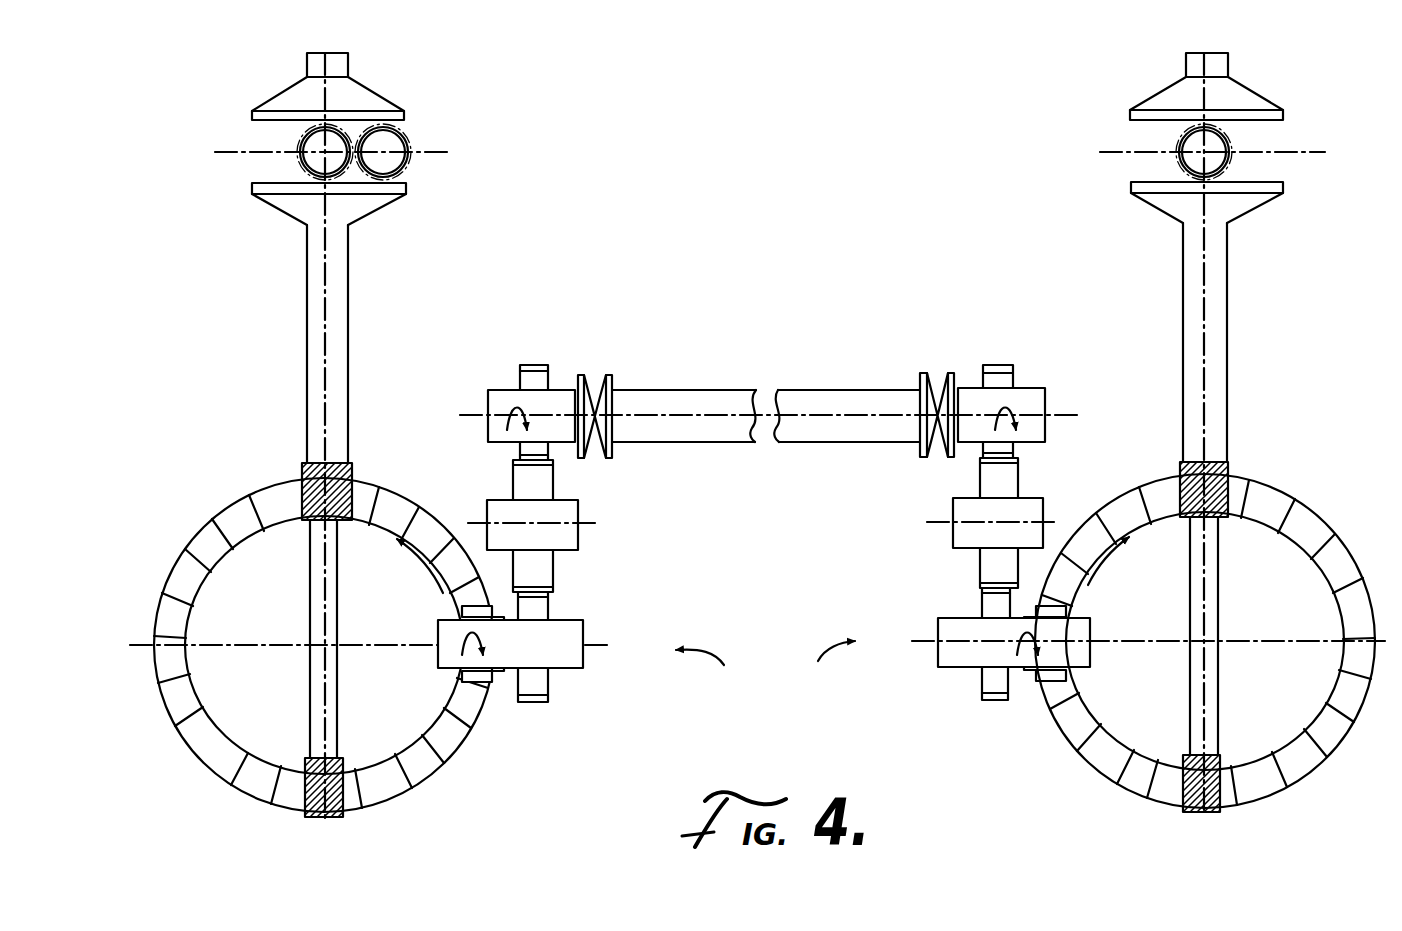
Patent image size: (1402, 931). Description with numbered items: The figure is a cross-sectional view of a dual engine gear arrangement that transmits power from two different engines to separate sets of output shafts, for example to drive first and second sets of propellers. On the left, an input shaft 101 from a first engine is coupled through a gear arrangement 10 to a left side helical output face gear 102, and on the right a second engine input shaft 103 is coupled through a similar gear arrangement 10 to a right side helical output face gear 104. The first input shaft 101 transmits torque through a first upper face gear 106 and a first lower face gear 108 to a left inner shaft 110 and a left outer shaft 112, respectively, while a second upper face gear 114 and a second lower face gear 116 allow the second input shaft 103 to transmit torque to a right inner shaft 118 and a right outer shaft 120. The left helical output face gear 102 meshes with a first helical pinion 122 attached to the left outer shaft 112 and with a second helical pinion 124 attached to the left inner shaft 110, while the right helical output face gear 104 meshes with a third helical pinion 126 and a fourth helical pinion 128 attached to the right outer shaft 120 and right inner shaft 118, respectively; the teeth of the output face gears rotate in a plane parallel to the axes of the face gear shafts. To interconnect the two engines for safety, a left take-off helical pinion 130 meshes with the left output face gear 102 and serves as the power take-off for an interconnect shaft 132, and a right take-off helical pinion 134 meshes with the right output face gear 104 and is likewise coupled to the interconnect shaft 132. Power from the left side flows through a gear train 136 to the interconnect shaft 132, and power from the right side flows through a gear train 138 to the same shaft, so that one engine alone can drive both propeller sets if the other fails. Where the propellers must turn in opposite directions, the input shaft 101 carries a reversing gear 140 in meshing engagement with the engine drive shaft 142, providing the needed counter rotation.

The gear arrangement 10 is at (757, 450).
The input shaft 101 is at (303, 145).
The left side helical output face gear 102 is at (222, 763).
The engine input shaft 103 is at (1180, 140).
The right side helical output face gear 104 is at (1294, 765).
The first upper face gear 106 is at (296, 93).
The first lower face gear 108 is at (368, 203).
The left inner shaft 110 is at (310, 600).
The left outer shaft 112 is at (310, 309).
The second upper face gear 114 is at (1244, 99).
The second lower face gear 116 is at (1170, 201).
The right inner shaft 118 is at (1212, 614).
The right outer shaft 120 is at (1220, 397).
The first helical pinion 122 is at (303, 474).
The second helical pinion 124 is at (345, 757).
The third helical pinion 126 is at (1228, 466).
The fourth helical pinion 128 is at (1195, 813).
The left take-off helical pinion 130 is at (572, 661).
The interconnect shaft 132 is at (696, 356).
The right take-off helical pinion 134 is at (965, 657).
The gear train 136 is at (706, 677).
The gear train 138 is at (822, 673).
The reversing gear 140 is at (298, 162).
The engine drive shaft 142 is at (410, 147).